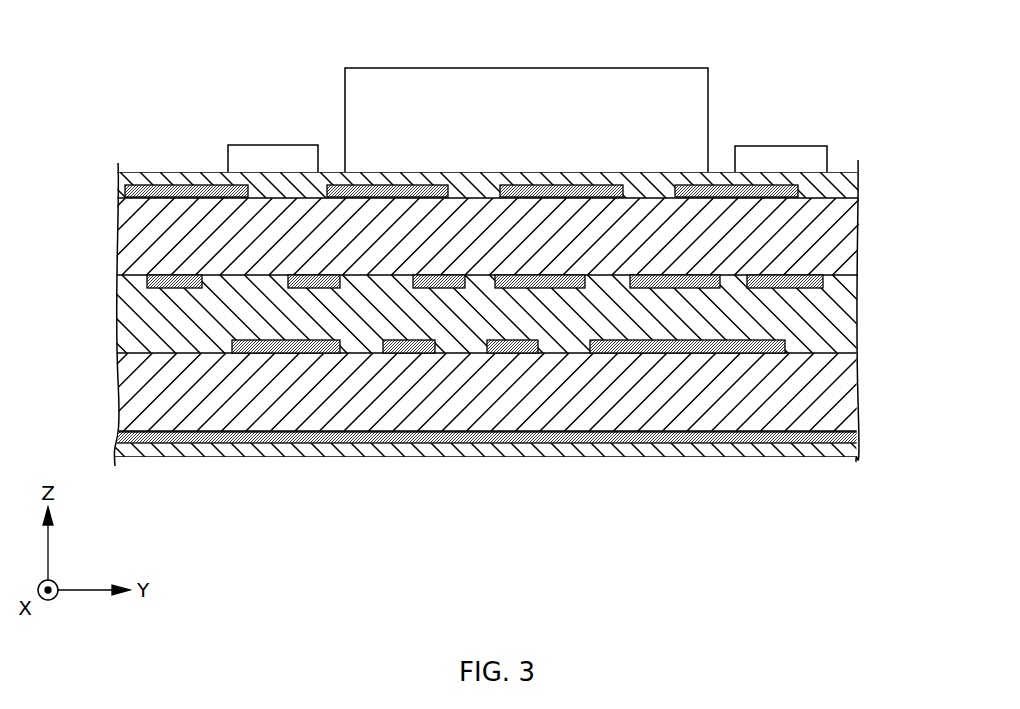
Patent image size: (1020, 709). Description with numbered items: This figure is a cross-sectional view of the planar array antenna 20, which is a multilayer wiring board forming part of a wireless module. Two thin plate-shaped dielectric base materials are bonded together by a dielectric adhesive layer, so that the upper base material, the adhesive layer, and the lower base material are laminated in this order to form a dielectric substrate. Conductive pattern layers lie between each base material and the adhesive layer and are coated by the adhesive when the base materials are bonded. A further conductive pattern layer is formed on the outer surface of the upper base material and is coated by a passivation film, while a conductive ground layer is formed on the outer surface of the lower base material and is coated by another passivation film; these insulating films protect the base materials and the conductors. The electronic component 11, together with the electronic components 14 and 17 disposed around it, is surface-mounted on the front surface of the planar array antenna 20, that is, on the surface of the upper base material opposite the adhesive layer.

The electronic component 11 is at (521, 78).
The electronic component 14 is at (276, 152).
The electronic component 17 is at (778, 152).
The planar array antenna 20 is at (153, 171).